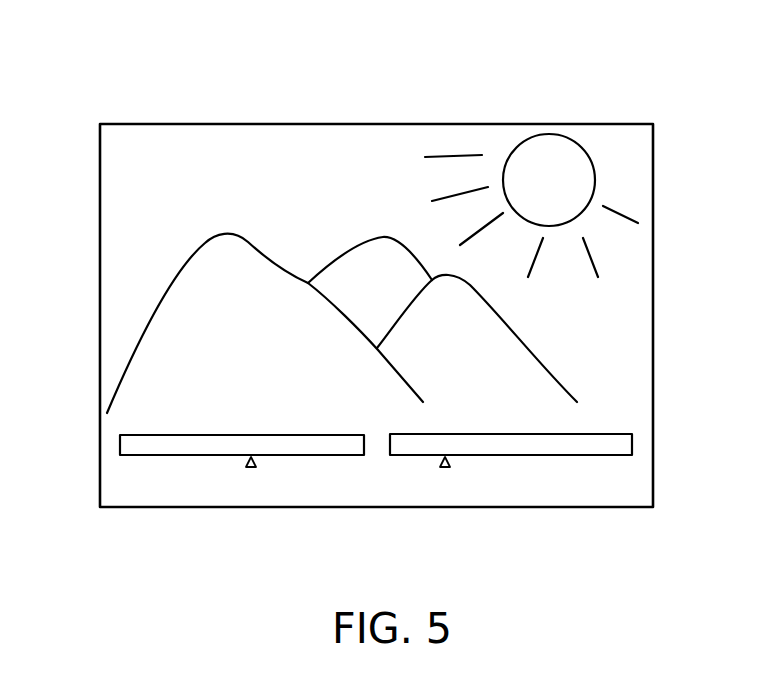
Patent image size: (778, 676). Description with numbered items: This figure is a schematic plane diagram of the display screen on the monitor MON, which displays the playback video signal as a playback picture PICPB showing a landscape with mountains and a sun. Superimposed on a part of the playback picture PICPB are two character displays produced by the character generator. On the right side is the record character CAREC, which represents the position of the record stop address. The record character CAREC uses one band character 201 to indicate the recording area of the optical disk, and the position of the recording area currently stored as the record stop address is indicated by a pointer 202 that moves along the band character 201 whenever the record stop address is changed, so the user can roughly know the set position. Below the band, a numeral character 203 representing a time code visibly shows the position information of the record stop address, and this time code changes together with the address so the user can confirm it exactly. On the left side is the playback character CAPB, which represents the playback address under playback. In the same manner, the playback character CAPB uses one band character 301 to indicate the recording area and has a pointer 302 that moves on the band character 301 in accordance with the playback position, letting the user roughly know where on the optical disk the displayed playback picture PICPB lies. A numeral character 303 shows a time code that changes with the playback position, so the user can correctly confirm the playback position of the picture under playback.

The band character 201 is at (597, 433).
The pointer 202 is at (442, 466).
The numeral character 203 is at (578, 495).
The band character 301 is at (260, 433).
The pointer 302 is at (258, 465).
The numeral character 303 is at (163, 495).
The monitor MON is at (619, 111).
The playback picture PICPB is at (243, 138).
The playback character CAPB is at (127, 470).
The record character CAREC is at (625, 480).